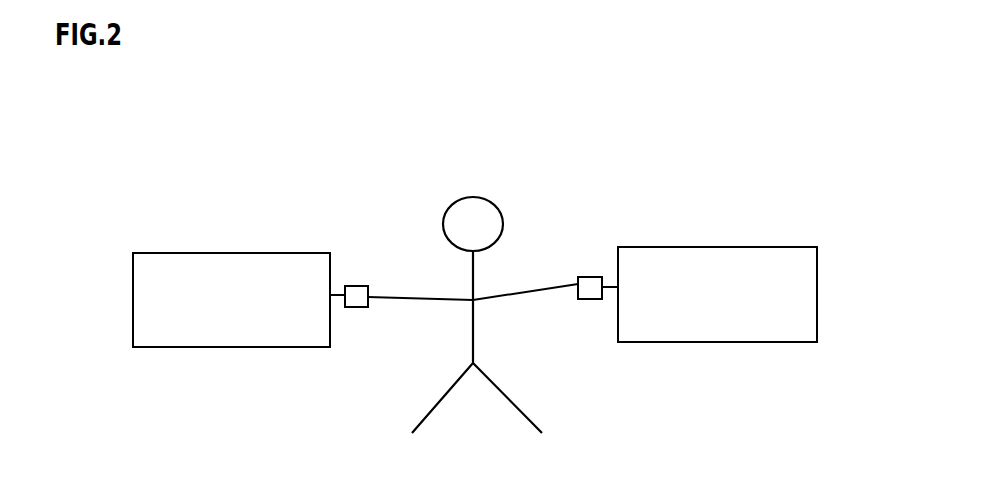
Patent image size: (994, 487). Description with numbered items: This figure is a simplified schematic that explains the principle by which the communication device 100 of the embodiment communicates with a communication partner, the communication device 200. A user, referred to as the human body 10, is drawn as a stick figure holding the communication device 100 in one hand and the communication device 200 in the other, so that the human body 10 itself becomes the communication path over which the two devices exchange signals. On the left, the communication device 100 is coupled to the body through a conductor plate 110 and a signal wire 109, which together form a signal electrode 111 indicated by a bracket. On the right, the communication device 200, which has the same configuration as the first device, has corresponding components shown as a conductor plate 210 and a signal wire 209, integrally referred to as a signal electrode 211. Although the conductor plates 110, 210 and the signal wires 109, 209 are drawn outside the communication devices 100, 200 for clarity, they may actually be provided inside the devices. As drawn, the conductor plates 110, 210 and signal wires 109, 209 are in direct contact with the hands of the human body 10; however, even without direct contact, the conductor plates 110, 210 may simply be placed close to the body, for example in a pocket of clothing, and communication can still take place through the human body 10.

The human body 10 is at (478, 197).
The communication device 100 is at (188, 255).
The signal wire 109 is at (333, 296).
The conductor plate 110 is at (358, 286).
The signal electrode 111 is at (417, 191).
The communication device 200 is at (768, 249).
The signal wire 209 is at (608, 286).
The conductor plate 210 is at (592, 277).
The signal electrode 211 is at (663, 191).